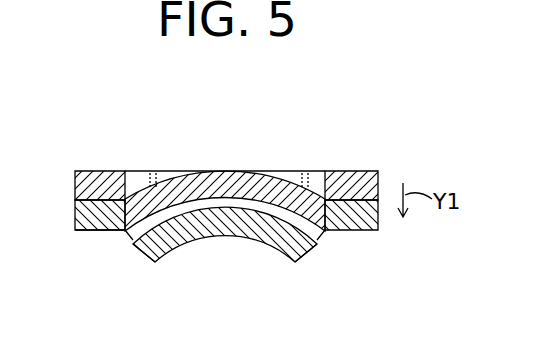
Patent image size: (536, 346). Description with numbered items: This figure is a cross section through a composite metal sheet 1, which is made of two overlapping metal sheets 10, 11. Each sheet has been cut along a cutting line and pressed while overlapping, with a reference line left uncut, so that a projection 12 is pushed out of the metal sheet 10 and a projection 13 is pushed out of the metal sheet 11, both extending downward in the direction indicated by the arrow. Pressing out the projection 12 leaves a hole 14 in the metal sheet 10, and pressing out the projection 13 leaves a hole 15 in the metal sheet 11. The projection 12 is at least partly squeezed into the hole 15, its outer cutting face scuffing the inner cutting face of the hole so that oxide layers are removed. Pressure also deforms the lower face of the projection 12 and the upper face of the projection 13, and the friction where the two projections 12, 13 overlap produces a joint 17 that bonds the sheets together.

The composite metal sheet 1 is at (367, 145).
The metal sheet 10 is at (83, 171).
The metal sheet 11 is at (78, 230).
The projection 12 is at (144, 256).
The projection 13 is at (182, 258).
The hole 14 is at (136, 171).
The hole 15 is at (132, 238).
The joint 17 is at (240, 171).